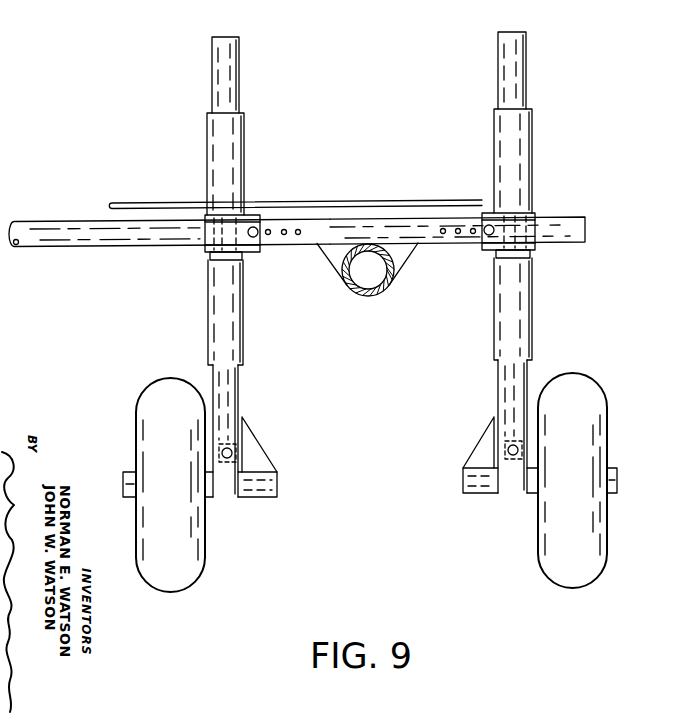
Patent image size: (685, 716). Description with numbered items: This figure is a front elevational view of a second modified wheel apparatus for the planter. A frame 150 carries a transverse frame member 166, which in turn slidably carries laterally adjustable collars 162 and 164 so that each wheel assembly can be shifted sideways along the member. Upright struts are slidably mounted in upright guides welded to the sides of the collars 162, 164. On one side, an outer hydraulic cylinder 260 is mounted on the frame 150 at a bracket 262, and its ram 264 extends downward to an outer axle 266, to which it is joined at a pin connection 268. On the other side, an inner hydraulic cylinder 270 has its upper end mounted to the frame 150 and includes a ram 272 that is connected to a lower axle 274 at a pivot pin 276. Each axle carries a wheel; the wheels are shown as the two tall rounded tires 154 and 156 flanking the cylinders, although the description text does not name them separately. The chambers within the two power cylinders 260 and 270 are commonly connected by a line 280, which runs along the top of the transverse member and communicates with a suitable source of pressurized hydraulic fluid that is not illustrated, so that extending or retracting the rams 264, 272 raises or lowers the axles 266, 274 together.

The frame 150 is at (388, 296).
The left wheel 154 is at (205, 548).
The right wheel 156 is at (538, 548).
The laterally adjustable collar 162 is at (255, 252).
The laterally adjustable collar 164 is at (483, 249).
The transverse frame member 166 is at (98, 248).
The outer hydraulic cylinder 260 is at (533, 290).
The bracket 262 is at (537, 253).
The ram 264 is at (500, 391).
The outer axle 266 is at (612, 462).
The pin connection 268 is at (505, 450).
The inner hydraulic cylinder 270 is at (210, 314).
The ram 272 is at (233, 388).
The lower axle 274 is at (252, 498).
The pivot pin 276 is at (238, 447).
The line 280 is at (373, 200).